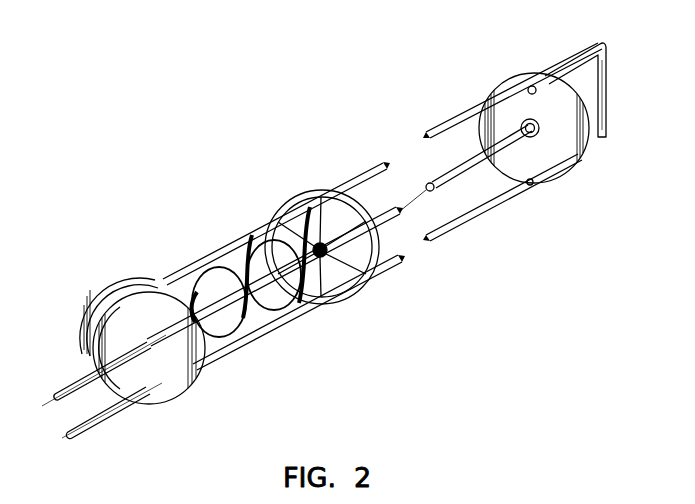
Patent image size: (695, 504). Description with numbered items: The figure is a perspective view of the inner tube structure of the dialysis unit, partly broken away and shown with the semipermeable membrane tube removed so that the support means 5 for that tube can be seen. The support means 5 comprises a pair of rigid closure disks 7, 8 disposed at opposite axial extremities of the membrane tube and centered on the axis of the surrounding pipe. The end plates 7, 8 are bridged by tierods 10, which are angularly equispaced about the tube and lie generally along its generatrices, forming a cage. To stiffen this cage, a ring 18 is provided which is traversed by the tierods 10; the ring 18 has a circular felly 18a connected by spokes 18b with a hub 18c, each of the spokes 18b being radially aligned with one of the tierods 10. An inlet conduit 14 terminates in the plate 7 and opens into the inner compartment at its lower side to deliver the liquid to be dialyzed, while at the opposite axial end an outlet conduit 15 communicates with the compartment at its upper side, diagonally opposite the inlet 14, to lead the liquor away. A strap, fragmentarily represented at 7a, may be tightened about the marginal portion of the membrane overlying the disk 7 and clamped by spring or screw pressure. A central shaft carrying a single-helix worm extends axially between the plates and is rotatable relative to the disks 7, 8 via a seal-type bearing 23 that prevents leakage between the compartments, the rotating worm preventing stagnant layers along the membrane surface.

The support means 5 is at (110, 313).
The closure disk 7 is at (133, 310).
The strap 7a is at (78, 328).
The closure disk 8 is at (558, 97).
The tierods 10 is at (227, 249).
The inlet conduit 14 is at (107, 414).
The outlet conduit 15 is at (543, 75).
The ring 18 is at (362, 274).
The circular felly 18a is at (356, 203).
The spokes 18b is at (373, 270).
The hub 18c is at (337, 268).
The seal-type bearing 23 is at (531, 184).